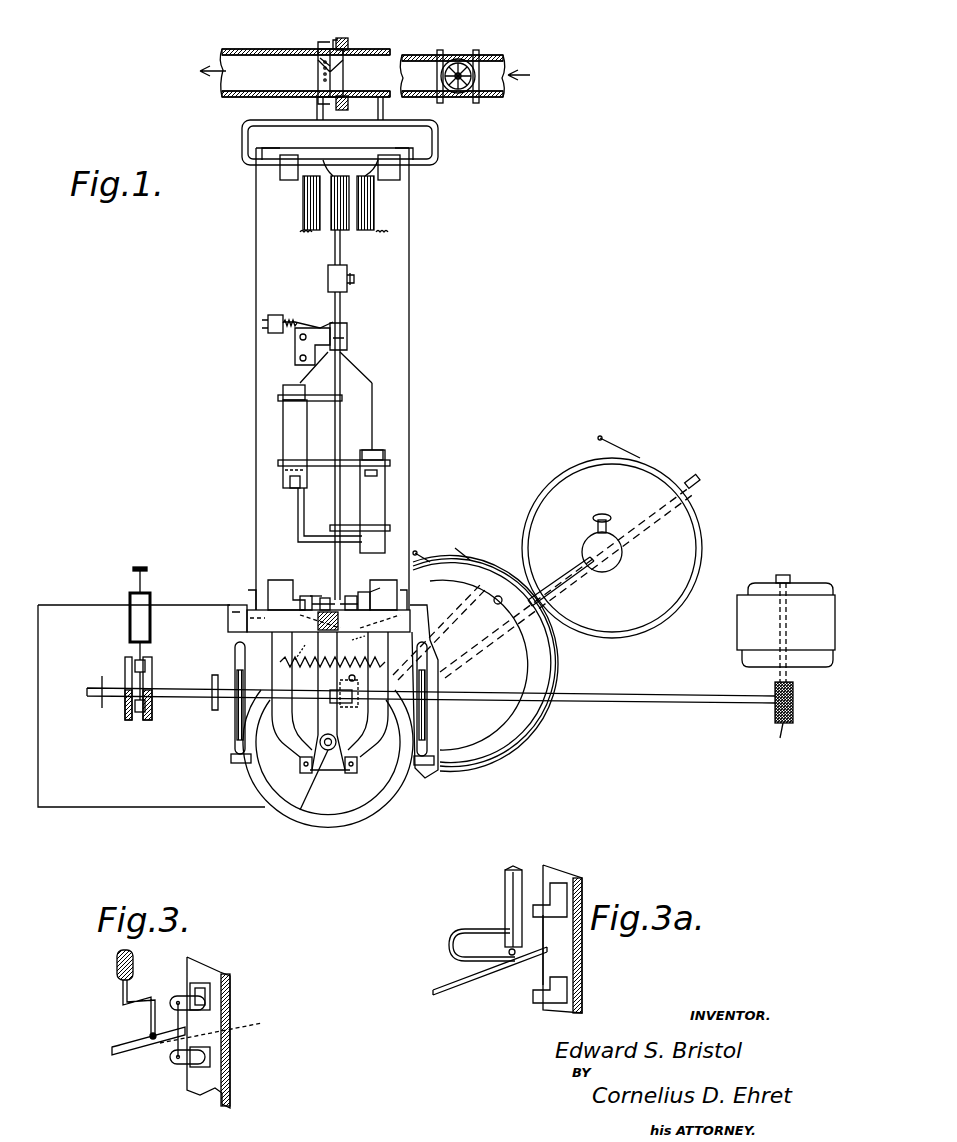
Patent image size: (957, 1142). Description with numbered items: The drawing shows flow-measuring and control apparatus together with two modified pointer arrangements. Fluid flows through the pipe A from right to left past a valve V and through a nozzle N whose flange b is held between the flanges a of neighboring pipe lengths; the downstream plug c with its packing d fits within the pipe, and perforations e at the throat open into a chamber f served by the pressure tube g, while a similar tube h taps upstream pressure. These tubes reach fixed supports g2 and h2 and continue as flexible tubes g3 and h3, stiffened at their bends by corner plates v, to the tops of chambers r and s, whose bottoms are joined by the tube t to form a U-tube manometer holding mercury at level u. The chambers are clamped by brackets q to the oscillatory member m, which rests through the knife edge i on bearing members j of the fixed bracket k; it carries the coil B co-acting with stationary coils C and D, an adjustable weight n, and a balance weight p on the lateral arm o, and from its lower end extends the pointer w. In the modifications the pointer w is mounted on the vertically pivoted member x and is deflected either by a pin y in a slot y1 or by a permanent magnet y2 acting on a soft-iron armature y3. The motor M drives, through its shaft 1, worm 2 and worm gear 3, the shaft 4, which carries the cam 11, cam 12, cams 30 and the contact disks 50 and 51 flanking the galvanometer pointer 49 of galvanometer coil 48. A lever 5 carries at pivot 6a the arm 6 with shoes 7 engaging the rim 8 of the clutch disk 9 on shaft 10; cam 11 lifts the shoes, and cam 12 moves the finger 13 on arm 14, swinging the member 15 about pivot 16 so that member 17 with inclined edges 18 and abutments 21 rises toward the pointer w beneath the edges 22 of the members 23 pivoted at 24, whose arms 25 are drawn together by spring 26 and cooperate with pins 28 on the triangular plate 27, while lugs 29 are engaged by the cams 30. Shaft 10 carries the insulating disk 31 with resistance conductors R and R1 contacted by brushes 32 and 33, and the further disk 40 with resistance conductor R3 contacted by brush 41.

In FIG. 1, the pipe A is at (255, 52).
In FIG. 1, the nozzle N is at (339, 73).
In FIG. 1, the flanges a is at (338, 45).
In FIG. 1, the flange of nozzle b is at (348, 42).
In FIG. 1, the plug c is at (318, 63).
In FIG. 1, the packing d is at (318, 48).
In FIG. 1, the perforations e is at (320, 76).
In FIG. 1, the chamber f is at (333, 49).
In FIG. 1, the pressure tube g is at (242, 140).
In FIG. 1, the fixed support g2 is at (285, 172).
In FIG. 1, the tube g3 is at (340, 160).
In FIG. 1, the pressure tube h is at (383, 104).
In FIG. 1, the fixed support h2 is at (395, 172).
In FIG. 1, the tube h3 is at (360, 170).
In FIG. 1, the corner plates v is at (310, 172).
In FIG. 1, the valve V is at (462, 92).
In FIG. 1, the coil B is at (374, 218).
In FIG. 1, the stationary coil C is at (303, 218).
In FIG. 1, the stationary coil D is at (372, 192).
In FIG. 1, the oscillatory member m is at (342, 258).
In FIG. 3, the oscillatory member m is at (133, 962).
In FIG. 3A, the oscillatory member m is at (505, 882).
In FIG. 1, the weight n is at (328, 276).
In FIG. 1, the knife edge i is at (325, 320).
In FIG. 1, the arm o is at (268, 318).
In FIG. 1, the balance weight p is at (268, 328).
In FIG. 1, the fixed bracket k is at (295, 346).
In FIG. 1, the bearing members j is at (347, 340).
In FIG. 1, the brackets q is at (296, 398).
In FIG. 1, the manometer chamber r is at (290, 430).
In FIG. 1, the manometer chamber s is at (382, 497).
In FIG. 1, the liquid level u is at (290, 480).
In FIG. 1, the tube t is at (298, 536).
In FIG. 1, the pointer w is at (322, 596).
In FIG. 3, the pointer w is at (150, 1045).
In FIG. 3A, the pointer w is at (440, 988).
In FIG. 3, the pivoted member x is at (216, 1025).
In FIG. 3A, the pivoted member x is at (570, 958).
In FIG. 3, the pin y is at (150, 1035).
In FIG. 3, the slot y1 is at (170, 1045).
In FIG. 3A, the permanent magnet y2 is at (475, 930).
In FIG. 3A, the armature y3 is at (515, 960).
In FIG. 1, the motor shaft 1 is at (794, 682).
In FIG. 1, the worm 2 is at (794, 696).
In FIG. 1, the worm gear 3 is at (777, 739).
In FIG. 1, the shaft 4 is at (112, 686).
In FIG. 1, the lever 5 is at (245, 765).
In FIG. 1, the arm 6 is at (400, 790).
In FIG. 1, the pivot 6a is at (330, 752).
In FIG. 1, the shoe 7 is at (415, 765).
In FIG. 1, the rim 8 is at (392, 785).
In FIG. 1, the clutch disk 9 is at (328, 758).
In FIG. 1, the shaft 10 is at (697, 490).
In FIG. 1, the cam 11 is at (318, 718).
In FIG. 1, the cam 12 is at (352, 695).
In FIG. 1, the finger 13 is at (353, 704).
In FIG. 1, the arm 14 is at (355, 676).
In FIG. 1, the member 15 is at (430, 614).
In FIG. 1, the pivot 16 is at (244, 604).
In FIG. 1, the member 17 is at (380, 590).
In FIG. 1, the inclined edges 18 is at (305, 605).
In FIG. 1, the abutments 21 is at (300, 600).
In FIG. 1, the edges 22 is at (315, 600).
In FIG. 1, the members 23 is at (324, 600).
In FIG. 1, the pivots 24 is at (418, 593).
In FIG. 1, the arms 25 is at (272, 663).
In FIG. 1, the spring 26 is at (300, 788).
In FIG. 1, the triangular plate 27 is at (328, 752).
In FIG. 1, the pins 28 is at (306, 773).
In FIG. 1, the lugs 29 is at (231, 757).
In FIG. 1, the cams 30 is at (235, 732).
In FIG. 1, the disk 31 is at (510, 676).
In FIG. 1, the brush 32 is at (418, 552).
In FIG. 1, the brush 33 is at (462, 570).
In FIG. 1, the disk 40 is at (680, 552).
In FIG. 1, the brush 41 is at (622, 439).
In FIG. 1, the galvanometer coil 48 is at (150, 612).
In FIG. 1, the galvanometer pointer 49 is at (150, 664).
In FIG. 1, the contact disk 50 is at (128, 720).
In FIG. 1, the contact disk 51 is at (148, 720).
In FIG. 1, the motor M is at (737, 625).
In FIG. 1, the resistance conductor R is at (450, 560).
In FIG. 1, the resistance conductor R1 is at (465, 560).
In FIG. 1, the resistance conductor R3 is at (650, 462).